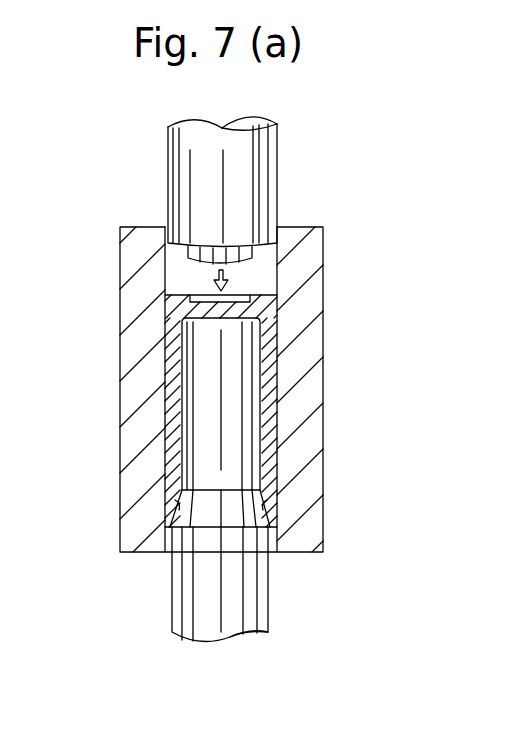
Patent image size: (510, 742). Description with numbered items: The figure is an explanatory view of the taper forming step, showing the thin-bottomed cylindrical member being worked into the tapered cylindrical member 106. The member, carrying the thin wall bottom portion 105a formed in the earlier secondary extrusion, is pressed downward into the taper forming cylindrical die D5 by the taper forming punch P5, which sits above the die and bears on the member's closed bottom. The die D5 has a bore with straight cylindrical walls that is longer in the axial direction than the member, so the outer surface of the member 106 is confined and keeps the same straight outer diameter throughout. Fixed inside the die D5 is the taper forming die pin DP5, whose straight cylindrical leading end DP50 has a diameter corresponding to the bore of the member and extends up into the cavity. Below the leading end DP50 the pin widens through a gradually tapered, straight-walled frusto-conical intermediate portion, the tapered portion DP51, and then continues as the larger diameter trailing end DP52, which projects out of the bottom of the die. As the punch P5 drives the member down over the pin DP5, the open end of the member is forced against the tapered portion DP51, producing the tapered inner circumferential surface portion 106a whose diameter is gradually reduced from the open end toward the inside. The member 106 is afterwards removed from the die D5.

The taper forming punch P5 is at (283, 177).
The taper forming cylindrical die D5 is at (325, 410).
The thin wall bottom portion 105a is at (250, 296).
The tapered cylindrical member 106 is at (172, 360).
The tapered inner circumferential surface portion 106a is at (177, 508).
The taper forming die pin DP5 is at (233, 481).
The straight cylindrical leading end DP50 is at (205, 400).
The tapered portion DP51 is at (268, 505).
The larger diameter trailing end DP52 is at (205, 584).